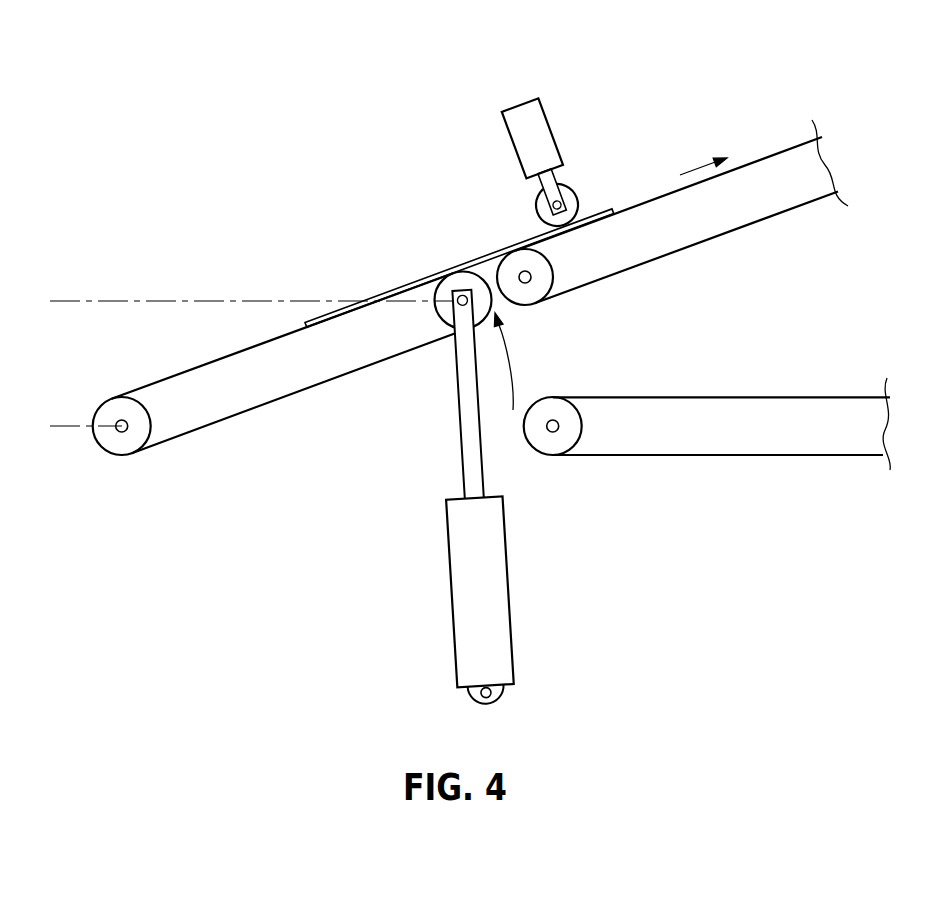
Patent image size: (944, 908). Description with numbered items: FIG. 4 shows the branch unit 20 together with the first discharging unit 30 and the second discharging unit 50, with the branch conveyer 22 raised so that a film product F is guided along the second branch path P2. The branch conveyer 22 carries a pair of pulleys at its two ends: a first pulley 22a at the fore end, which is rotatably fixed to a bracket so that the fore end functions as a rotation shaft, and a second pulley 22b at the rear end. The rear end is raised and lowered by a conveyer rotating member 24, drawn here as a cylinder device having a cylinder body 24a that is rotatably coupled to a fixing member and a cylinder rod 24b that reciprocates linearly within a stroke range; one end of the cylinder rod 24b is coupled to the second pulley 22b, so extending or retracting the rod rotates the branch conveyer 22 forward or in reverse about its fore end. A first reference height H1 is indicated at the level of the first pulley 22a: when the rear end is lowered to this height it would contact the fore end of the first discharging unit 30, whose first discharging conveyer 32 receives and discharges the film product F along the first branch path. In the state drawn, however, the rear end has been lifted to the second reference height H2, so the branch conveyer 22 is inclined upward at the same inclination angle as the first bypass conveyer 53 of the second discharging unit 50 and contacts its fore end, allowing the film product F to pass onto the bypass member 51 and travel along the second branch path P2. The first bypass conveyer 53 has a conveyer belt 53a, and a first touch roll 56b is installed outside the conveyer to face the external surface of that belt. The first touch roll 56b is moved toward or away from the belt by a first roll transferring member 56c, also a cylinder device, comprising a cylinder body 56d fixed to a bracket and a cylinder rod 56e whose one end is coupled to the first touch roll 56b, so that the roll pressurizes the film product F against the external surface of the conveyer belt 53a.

The branch unit 20 is at (285, 414).
The branch conveyer 22 is at (207, 415).
The first pulley 22a is at (118, 447).
The second pulley 22b is at (445, 327).
The conveyer rotating member 24 is at (473, 497).
The cylinder body 24a is at (480, 591).
The cylinder rod 24b is at (468, 395).
The first discharging unit 30 is at (707, 468).
The first discharging conveyer 32 is at (682, 443).
The second discharging unit 50 is at (678, 188).
The bypass member 51 is at (812, 220).
The first bypass conveyer 53 is at (678, 206).
The conveyer belt 53a is at (672, 190).
The first touch roll 56b is at (557, 205).
The first roll transferring member 56c is at (538, 135).
The cylinder body 56d is at (532, 138).
The cylinder rod 56e is at (552, 192).
The film product F is at (412, 280).
The first reference height H1 is at (75, 425).
The second reference height H2 is at (245, 300).
The second branch path P2 is at (703, 154).